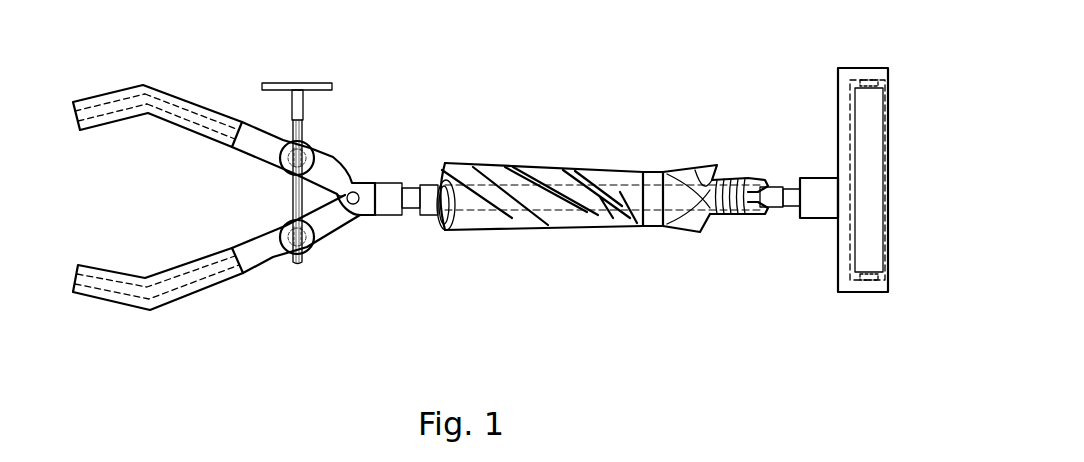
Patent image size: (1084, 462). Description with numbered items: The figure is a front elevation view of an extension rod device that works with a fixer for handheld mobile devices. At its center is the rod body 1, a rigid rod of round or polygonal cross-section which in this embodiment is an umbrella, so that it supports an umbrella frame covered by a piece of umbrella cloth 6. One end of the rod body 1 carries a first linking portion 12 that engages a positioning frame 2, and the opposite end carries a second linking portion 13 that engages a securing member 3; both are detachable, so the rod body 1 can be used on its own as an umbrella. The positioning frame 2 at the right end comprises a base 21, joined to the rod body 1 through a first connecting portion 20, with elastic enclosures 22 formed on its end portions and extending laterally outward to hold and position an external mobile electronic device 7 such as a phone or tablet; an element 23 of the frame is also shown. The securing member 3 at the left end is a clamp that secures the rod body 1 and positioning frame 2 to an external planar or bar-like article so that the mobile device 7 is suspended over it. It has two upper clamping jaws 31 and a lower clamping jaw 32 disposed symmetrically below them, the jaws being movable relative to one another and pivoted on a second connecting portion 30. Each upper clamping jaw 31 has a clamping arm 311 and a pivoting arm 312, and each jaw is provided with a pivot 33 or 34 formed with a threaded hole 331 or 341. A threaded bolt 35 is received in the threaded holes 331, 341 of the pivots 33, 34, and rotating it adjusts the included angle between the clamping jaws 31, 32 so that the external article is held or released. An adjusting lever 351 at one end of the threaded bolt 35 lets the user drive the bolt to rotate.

The rod body 1 is at (478, 174).
The positioning frame 2 is at (845, 310).
The securing member 3 is at (352, 272).
The umbrella cloth 6 is at (620, 227).
The external mobile electronic device 7 is at (888, 255).
The first linking portion 12 is at (790, 203).
The second linking portion 13 is at (412, 199).
The first connecting portion 20 is at (812, 184).
The base 21 is at (840, 147).
The elastic enclosures 22 is at (868, 72).
The insert 23 is at (888, 90).
The second connecting portion 30 is at (382, 186).
The upper clamping jaws 31 is at (237, 33).
The clamping arm 311 is at (175, 103).
The pivoting arm 312 is at (265, 130).
The lower clamping jaw 32 is at (176, 295).
The pivot 33 is at (308, 166).
The threaded hole 331 is at (290, 177).
The pivot 34 is at (286, 248).
The threaded hole 341 is at (289, 216).
The threaded bolt 35 is at (302, 106).
The adjusting lever 351 is at (312, 83).